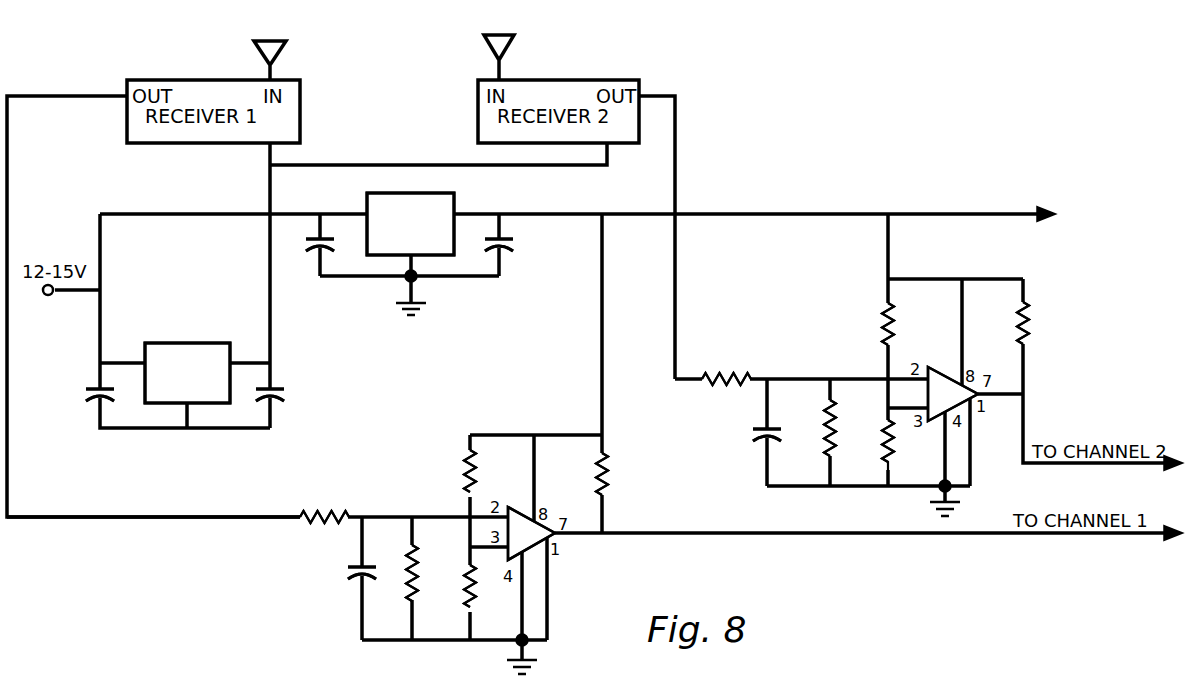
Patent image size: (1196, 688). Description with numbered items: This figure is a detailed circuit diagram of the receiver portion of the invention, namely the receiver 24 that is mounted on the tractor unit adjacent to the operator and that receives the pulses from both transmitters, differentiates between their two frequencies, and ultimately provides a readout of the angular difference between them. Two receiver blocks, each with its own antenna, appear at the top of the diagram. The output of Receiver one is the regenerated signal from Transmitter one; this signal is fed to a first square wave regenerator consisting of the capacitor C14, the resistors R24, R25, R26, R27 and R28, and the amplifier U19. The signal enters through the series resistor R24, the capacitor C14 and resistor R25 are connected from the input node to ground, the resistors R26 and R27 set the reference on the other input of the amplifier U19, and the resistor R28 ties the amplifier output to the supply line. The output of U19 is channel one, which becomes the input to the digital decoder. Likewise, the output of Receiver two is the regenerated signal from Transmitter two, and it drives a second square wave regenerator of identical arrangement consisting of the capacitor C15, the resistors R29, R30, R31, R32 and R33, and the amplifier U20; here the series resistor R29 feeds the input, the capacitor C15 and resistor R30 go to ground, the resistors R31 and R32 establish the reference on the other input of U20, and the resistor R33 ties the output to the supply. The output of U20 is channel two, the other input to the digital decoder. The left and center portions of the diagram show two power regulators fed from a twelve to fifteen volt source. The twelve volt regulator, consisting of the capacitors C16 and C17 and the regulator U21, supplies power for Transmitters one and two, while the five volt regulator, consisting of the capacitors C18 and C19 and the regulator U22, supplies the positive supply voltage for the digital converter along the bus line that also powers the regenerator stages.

The receiver 24 is at (196, 545).
The resistor R24 is at (324, 502).
The capacitor C14 is at (338, 579).
The resistor R25 is at (428, 571).
The resistor R26 is at (486, 592).
The resistor R27 is at (447, 471).
The resistor R28 is at (618, 474).
The square wave regenerator amplifier U19 is at (523, 535).
The capacitor C16 is at (77, 394).
The capacitor C17 is at (289, 394).
The twelve volt regulator U21 is at (187, 373).
The capacitor C18 is at (304, 254).
The capacitor C19 is at (518, 252).
The five volt regulator U22 is at (410, 224).
The resistor R29 is at (725, 362).
The capacitor C15 is at (743, 438).
The resistor R30 is at (810, 427).
The resistor R31 is at (905, 443).
The resistor R32 is at (865, 324).
The square wave regenerator amplifier U20 is at (942, 388).
The resistor R33 is at (1042, 323).